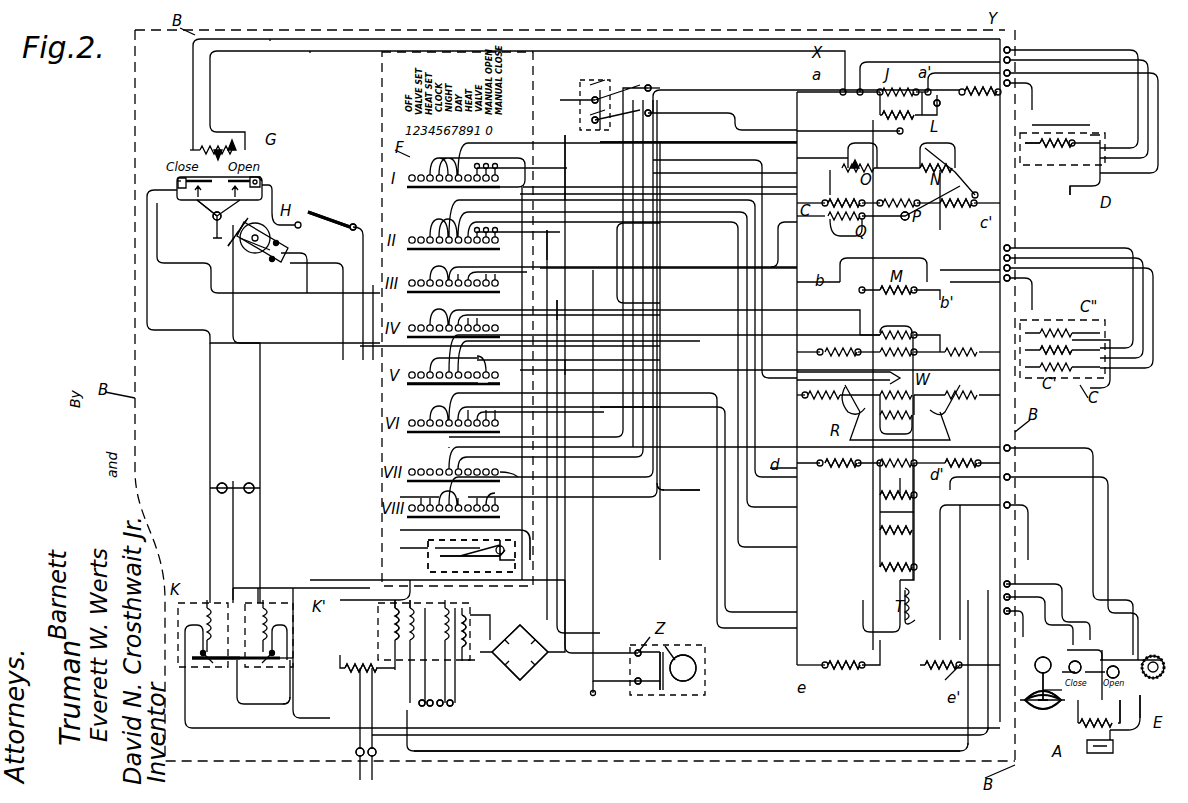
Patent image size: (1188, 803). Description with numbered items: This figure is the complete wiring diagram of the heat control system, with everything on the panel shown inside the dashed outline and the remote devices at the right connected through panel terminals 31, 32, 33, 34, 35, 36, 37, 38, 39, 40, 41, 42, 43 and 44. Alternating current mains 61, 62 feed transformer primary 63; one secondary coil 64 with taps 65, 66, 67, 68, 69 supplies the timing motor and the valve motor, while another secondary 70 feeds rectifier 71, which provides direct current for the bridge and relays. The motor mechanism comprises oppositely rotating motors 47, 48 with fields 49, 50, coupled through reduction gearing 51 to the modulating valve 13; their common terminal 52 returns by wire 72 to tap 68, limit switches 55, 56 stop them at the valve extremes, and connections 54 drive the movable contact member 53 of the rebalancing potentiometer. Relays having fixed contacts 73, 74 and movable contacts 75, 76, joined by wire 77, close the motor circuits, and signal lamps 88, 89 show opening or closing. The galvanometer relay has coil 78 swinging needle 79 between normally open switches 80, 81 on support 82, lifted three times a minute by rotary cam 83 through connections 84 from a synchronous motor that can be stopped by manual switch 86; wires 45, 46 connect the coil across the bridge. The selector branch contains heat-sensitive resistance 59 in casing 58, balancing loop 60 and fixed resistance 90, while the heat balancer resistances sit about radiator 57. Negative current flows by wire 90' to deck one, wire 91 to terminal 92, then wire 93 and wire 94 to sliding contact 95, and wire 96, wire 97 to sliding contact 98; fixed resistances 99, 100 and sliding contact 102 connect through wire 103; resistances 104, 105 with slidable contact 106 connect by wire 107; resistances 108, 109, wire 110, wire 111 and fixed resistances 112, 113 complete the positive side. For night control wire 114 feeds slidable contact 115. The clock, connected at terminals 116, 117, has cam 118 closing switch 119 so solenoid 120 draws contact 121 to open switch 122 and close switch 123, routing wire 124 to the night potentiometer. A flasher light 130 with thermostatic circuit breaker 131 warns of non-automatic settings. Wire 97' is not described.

The modulating valve 13 is at (1048, 728).
The panel terminal 31 is at (1012, 50).
The panel terminal 32 is at (1003, 61).
The panel terminal 33 is at (1012, 73).
The panel terminal 34 is at (1012, 86).
The panel terminal 35 is at (1012, 248).
The panel terminal 36 is at (1003, 260).
The panel terminal 37 is at (1012, 268).
The panel terminal 38 is at (1012, 282).
The panel terminal 39 is at (1012, 447).
The panel terminal 40 is at (1012, 477).
The panel terminal 41 is at (1012, 505).
The panel terminal 42 is at (1012, 584).
The panel terminal 43 is at (1012, 597).
The panel terminal 44 is at (1010, 614).
The wire 45 is at (312, 51).
The wire 46 is at (272, 41).
The valve-opening motor 47 is at (1109, 666).
The valve-closing motor 48 is at (1033, 665).
The motor field 49 is at (1113, 709).
The motor field 50 is at (1096, 711).
The reduction gearing 51 is at (1055, 685).
The common motor terminal 52 is at (1043, 690).
The movable contact member 53 is at (1143, 706).
The driving connections 54 is at (1154, 658).
The limit switch 55 is at (1105, 658).
The limit switch 56 is at (1070, 660).
The radiator 57 is at (1105, 352).
The casing 58 is at (1033, 127).
The heat-sensitive resistance 59 is at (1058, 140).
The balancing loop 60 is at (1070, 180).
The alternating current supply main 61 is at (358, 778).
The alternating current supply main 62 is at (375, 778).
The transformer primary 63 is at (392, 630).
The transformer secondary coil 64 is at (395, 604).
The secondary tap 65 is at (365, 671).
The secondary tap 66 is at (419, 704).
The secondary tap 67 is at (427, 701).
The secondary tap 68 is at (443, 701).
The secondary tap 69 is at (453, 704).
The transformer secondary 70 is at (466, 632).
The rectifier 71 is at (530, 665).
The wire 72 is at (492, 753).
The fixed contact 73 is at (293, 660).
The fixed contact 74 is at (192, 656).
The movable contact 75 is at (262, 663).
The movable contact 76 is at (203, 663).
The wire 77 is at (294, 702).
The galvanometer coil 78 is at (193, 150).
The indicating needle 79 is at (235, 145).
The normally open switch 80 is at (264, 183).
The normally open switch 81 is at (180, 183).
The movable support 82 is at (196, 204).
The rotary cam 83 is at (213, 220).
The connections 84 is at (230, 236).
The manually operated switch 86 is at (332, 218).
The signal lamp 88 is at (222, 482).
The signal lamp 89 is at (229, 463).
The fixed resistance 90 is at (978, 103).
The wire 90' is at (585, 396).
The wire 91 is at (560, 150).
The terminal 92 is at (928, 177).
The wire 93 is at (655, 480).
The wire 94 is at (738, 90).
The sliding contact 95 is at (938, 107).
The wire 96 is at (848, 168).
The wire 97 is at (590, 359).
The conductor 97' is at (861, 326).
The sliding contact 98 is at (896, 293).
The fixed resistance 99 is at (851, 209).
The fixed resistance 100 is at (958, 207).
The sliding contact 102 is at (903, 220).
The wire 103 is at (578, 265).
The resistance 104 is at (845, 467).
The resistance 105 is at (958, 468).
The slidable contact 106 is at (880, 488).
The wire 107 is at (580, 160).
The fixed resistance 108 is at (845, 678).
The fixed resistance 109 is at (936, 677).
The wire 110 is at (690, 490).
The wire 111 is at (728, 640).
The fixed resistance 112 is at (880, 555).
The fixed resistance 113 is at (905, 562).
The wire 114 is at (455, 447).
The slidable contact 115 is at (882, 119).
The panel terminal 116 is at (606, 692).
The panel terminal 117 is at (608, 664).
The rotating cam 118 is at (683, 655).
The switch 119 is at (660, 690).
The solenoid 120 is at (595, 120).
The movable contact 121 is at (590, 100).
The normally closed switch 122 is at (645, 88).
The normally open switch 123 is at (650, 88).
The wire 124 is at (652, 112).
The flasher light 130 is at (515, 540).
The thermostatic circuit breaker 131 is at (440, 558).